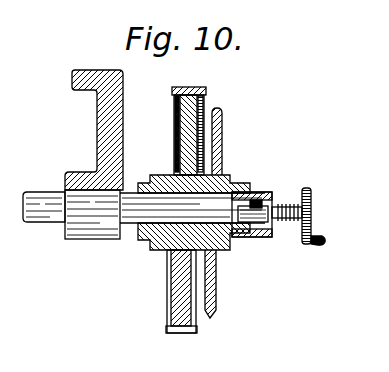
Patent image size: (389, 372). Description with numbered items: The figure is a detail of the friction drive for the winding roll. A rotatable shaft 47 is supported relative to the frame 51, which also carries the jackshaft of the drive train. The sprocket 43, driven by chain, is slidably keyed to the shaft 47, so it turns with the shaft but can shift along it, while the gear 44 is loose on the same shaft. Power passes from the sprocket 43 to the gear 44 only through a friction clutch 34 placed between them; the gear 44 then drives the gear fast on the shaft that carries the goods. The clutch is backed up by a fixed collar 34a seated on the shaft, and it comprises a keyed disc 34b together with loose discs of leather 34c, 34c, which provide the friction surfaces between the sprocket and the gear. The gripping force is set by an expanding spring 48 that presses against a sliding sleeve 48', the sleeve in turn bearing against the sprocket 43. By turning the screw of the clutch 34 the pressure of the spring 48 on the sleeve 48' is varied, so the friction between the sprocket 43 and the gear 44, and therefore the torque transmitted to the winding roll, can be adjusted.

The frame 51 is at (97, 124).
The rotatable shaft 47 is at (55, 208).
The fixed collar 34a is at (144, 182).
The keyed disc 34b is at (156, 243).
The loose discs of leather 34c is at (167, 247).
The gear 44 is at (203, 91).
The sprocket 43 is at (223, 141).
The sliding sleeve 48' is at (262, 199).
The expanding spring 48 is at (270, 238).
The clutch 34 is at (310, 192).